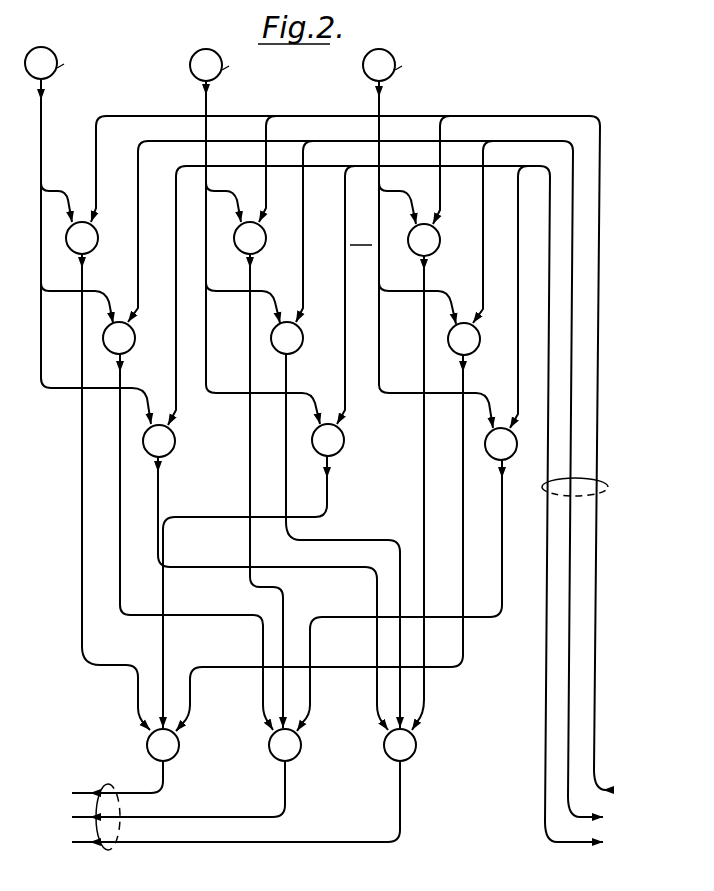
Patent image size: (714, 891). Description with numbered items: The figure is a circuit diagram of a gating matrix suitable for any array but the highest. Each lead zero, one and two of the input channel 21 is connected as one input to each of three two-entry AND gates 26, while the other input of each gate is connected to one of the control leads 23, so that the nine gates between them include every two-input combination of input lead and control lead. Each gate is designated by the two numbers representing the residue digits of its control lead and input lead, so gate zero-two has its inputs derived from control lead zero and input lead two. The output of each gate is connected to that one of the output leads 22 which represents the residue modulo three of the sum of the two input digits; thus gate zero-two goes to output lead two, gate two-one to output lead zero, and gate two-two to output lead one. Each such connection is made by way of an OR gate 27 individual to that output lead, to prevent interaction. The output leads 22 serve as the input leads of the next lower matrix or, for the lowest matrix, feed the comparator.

The input channel 21 is at (542, 487).
The output leads 22 is at (110, 850).
The control leads 23 is at (44, 107).
The two-entry AND gates 26 is at (144, 436).
The OR gate 27 is at (384, 744).